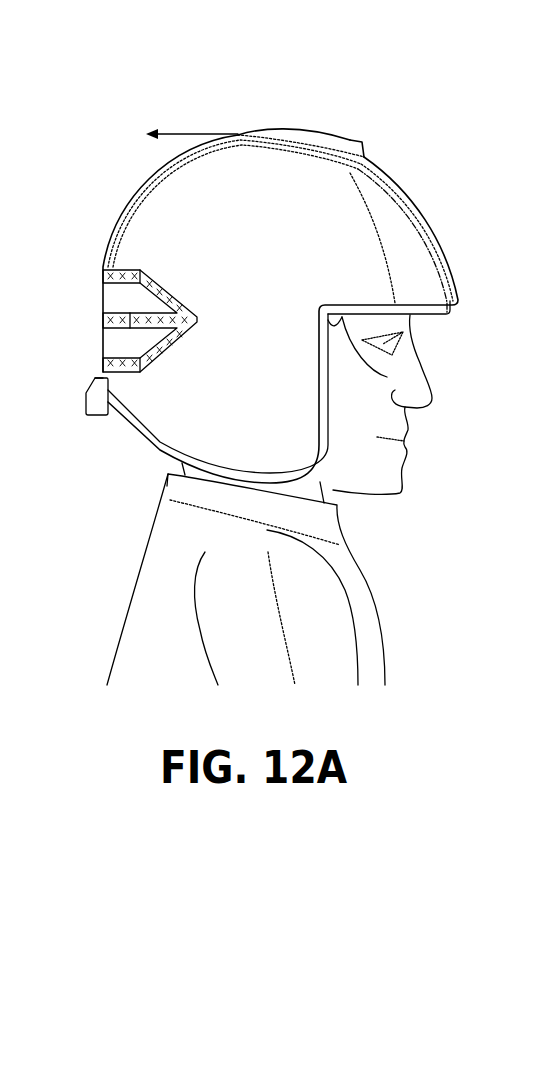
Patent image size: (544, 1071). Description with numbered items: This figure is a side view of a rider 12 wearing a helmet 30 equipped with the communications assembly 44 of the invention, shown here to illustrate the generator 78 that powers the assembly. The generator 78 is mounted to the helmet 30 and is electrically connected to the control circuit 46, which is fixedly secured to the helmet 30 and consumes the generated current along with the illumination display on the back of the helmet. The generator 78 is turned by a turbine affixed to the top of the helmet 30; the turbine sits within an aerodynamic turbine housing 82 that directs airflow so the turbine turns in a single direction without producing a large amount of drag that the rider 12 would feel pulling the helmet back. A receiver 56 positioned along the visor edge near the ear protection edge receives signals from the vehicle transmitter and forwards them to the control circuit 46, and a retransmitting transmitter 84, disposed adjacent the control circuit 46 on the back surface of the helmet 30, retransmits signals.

The rider 12 is at (160, 563).
The helmet 30 is at (140, 192).
The communications assembly 44 is at (110, 140).
The control circuit 46 is at (90, 408).
The receiver 56 is at (387, 377).
The generator 78 is at (268, 127).
The turbine housing 82 is at (356, 141).
The retransmitting transmitter 84 is at (101, 363).